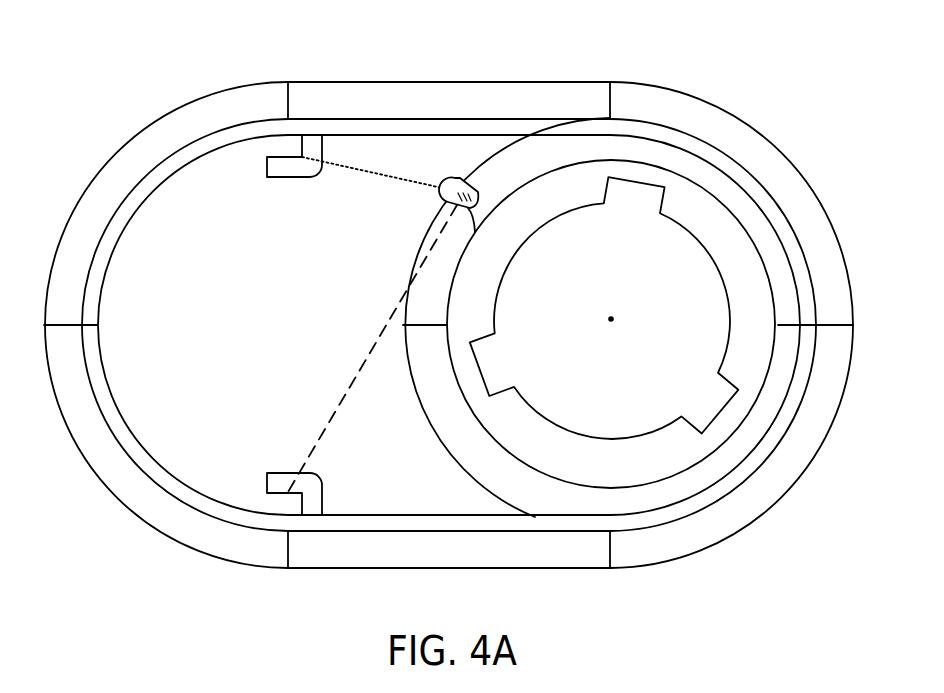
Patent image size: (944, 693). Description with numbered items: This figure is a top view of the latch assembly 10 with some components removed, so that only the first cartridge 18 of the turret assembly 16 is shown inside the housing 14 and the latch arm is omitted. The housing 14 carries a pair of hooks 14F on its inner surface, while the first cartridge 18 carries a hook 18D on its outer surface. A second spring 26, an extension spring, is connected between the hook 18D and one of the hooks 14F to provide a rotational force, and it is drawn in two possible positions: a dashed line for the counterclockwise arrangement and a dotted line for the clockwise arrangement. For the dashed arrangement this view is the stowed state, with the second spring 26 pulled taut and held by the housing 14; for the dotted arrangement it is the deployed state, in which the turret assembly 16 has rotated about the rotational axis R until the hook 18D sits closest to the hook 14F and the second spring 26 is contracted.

The latch assembly 10 is at (68, 130).
The housing 14 is at (210, 96).
The hooks 14F is at (272, 178).
The turret assembly 16 is at (424, 489).
The first cartridge 18 is at (560, 425).
The hook 18D is at (446, 203).
The second spring 26 is at (360, 170).
The rotational axis R is at (611, 307).